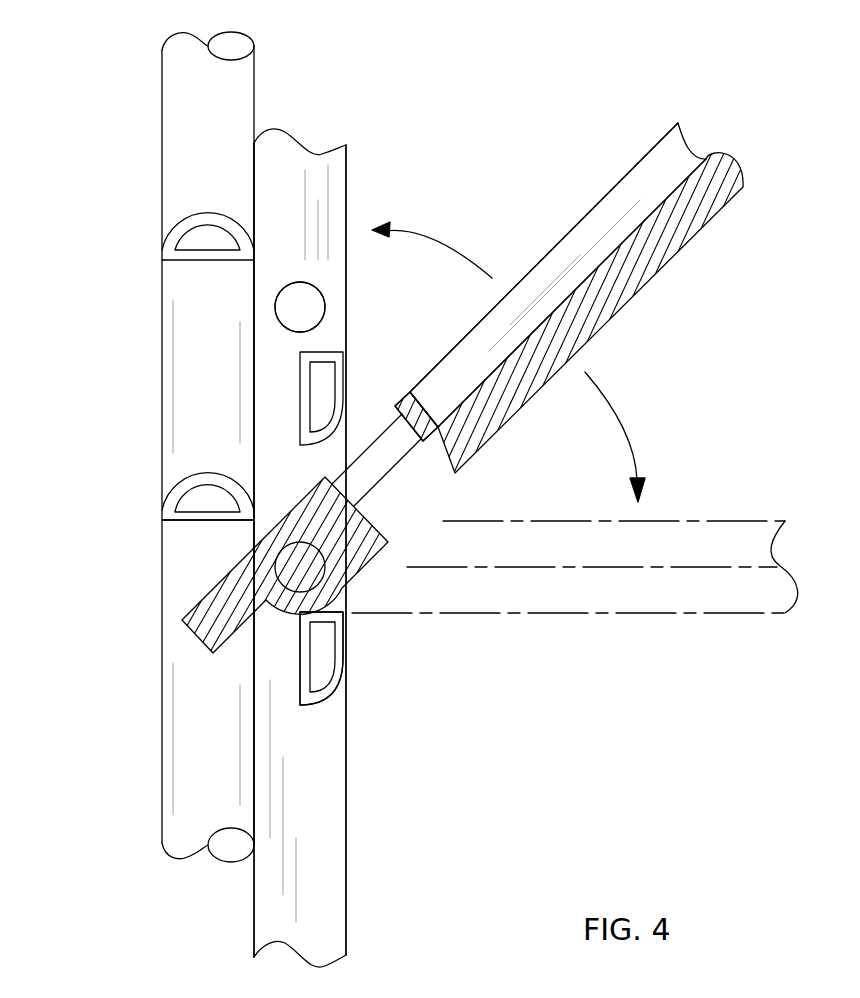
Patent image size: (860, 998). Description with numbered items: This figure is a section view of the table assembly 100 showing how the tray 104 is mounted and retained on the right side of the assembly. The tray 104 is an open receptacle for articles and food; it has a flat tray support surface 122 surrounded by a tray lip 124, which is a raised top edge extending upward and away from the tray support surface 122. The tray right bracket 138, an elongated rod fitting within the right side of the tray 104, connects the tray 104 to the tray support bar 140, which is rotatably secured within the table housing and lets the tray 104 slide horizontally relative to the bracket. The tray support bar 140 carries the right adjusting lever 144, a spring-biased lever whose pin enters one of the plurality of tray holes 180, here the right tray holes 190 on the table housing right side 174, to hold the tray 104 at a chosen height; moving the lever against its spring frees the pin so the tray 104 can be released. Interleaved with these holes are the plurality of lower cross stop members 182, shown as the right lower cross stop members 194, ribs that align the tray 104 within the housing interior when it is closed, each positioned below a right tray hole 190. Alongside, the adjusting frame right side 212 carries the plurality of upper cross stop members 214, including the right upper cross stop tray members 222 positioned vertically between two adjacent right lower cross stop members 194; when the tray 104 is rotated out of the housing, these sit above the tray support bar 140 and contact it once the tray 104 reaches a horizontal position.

The table assembly 100 is at (335, 863).
The tray 104 is at (628, 172).
The tray support surface 122 is at (665, 232).
The tray lip 124 is at (540, 262).
The tray right bracket 138 is at (423, 480).
The tray support bar 140 is at (352, 558).
The right adjusting lever 144 is at (310, 575).
The table housing right side 174 is at (335, 798).
The plurality of tray holes 180 is at (307, 294).
The plurality of lower cross stop members 182 is at (300, 672).
The right tray holes 190 is at (277, 312).
The right lower cross stop members 194 is at (300, 405).
The adjusting frame right side 212 is at (187, 795).
The plurality of upper cross stop members 214 is at (173, 518).
The right upper cross stop tray members 222 is at (165, 240).